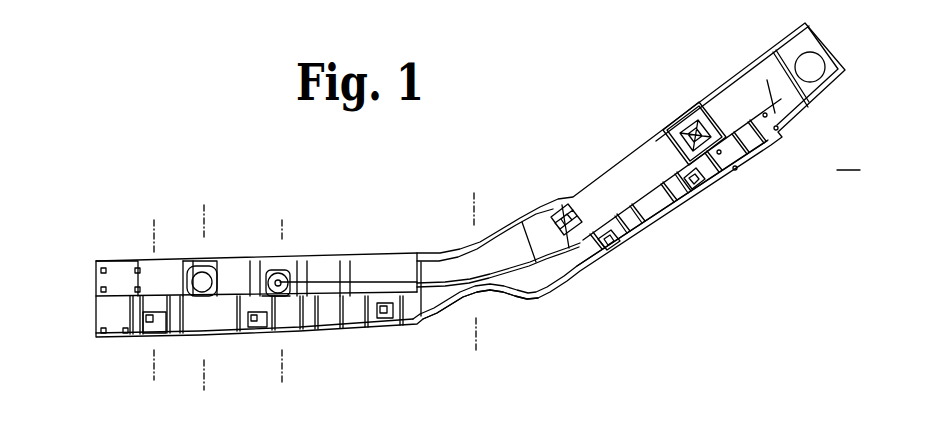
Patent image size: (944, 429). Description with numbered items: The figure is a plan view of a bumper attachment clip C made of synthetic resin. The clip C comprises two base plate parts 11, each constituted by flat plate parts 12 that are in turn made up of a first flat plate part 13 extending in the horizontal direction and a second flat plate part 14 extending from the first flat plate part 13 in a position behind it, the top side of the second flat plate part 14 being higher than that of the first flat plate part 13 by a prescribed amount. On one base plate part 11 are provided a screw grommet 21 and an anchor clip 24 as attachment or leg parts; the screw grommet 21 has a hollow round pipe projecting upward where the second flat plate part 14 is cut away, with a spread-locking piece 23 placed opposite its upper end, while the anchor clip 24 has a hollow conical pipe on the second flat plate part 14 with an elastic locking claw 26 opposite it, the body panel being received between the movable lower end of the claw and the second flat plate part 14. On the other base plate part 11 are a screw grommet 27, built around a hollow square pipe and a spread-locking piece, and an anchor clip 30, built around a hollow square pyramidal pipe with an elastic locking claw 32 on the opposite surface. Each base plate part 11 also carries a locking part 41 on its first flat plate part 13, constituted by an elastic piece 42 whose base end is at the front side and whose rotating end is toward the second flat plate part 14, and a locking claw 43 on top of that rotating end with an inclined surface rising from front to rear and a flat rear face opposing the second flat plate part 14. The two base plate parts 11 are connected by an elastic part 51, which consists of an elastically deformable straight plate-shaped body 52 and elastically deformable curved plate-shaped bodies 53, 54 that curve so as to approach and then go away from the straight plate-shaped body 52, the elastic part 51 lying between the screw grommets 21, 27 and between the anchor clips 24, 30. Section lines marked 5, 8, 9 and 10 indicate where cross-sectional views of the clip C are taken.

The section line 5- 5 is at (493, 201).
The section line 8- 8 is at (173, 229).
The section line 9- 9 is at (225, 213).
The section line 10- 10 is at (300, 230).
The base plate part 11 is at (93, 313).
The flat plate parts 12 is at (142, 223).
The first flat plate part 13 is at (117, 313).
The second flat plate part 14 is at (160, 285).
The screw grommet 21 is at (217, 277).
The spread-locking piece 23 is at (193, 267).
The anchor clip 24 is at (267, 297).
The elastic locking claw 26 is at (287, 283).
The screw grommet 27 is at (560, 203).
The anchor clip 30 is at (678, 131).
The elastic locking claw 32 is at (719, 122).
The locking part 41 is at (152, 329).
The elastic piece 42 is at (380, 319).
The locking claw 43 is at (391, 317).
The elastic part 51 is at (503, 303).
The straight plate-shaped body 52 is at (540, 293).
The curved plate-shaped body 53 is at (448, 308).
The curved plate-shaped body 54 is at (437, 252).
The bumper attachment clip C is at (800, 130).